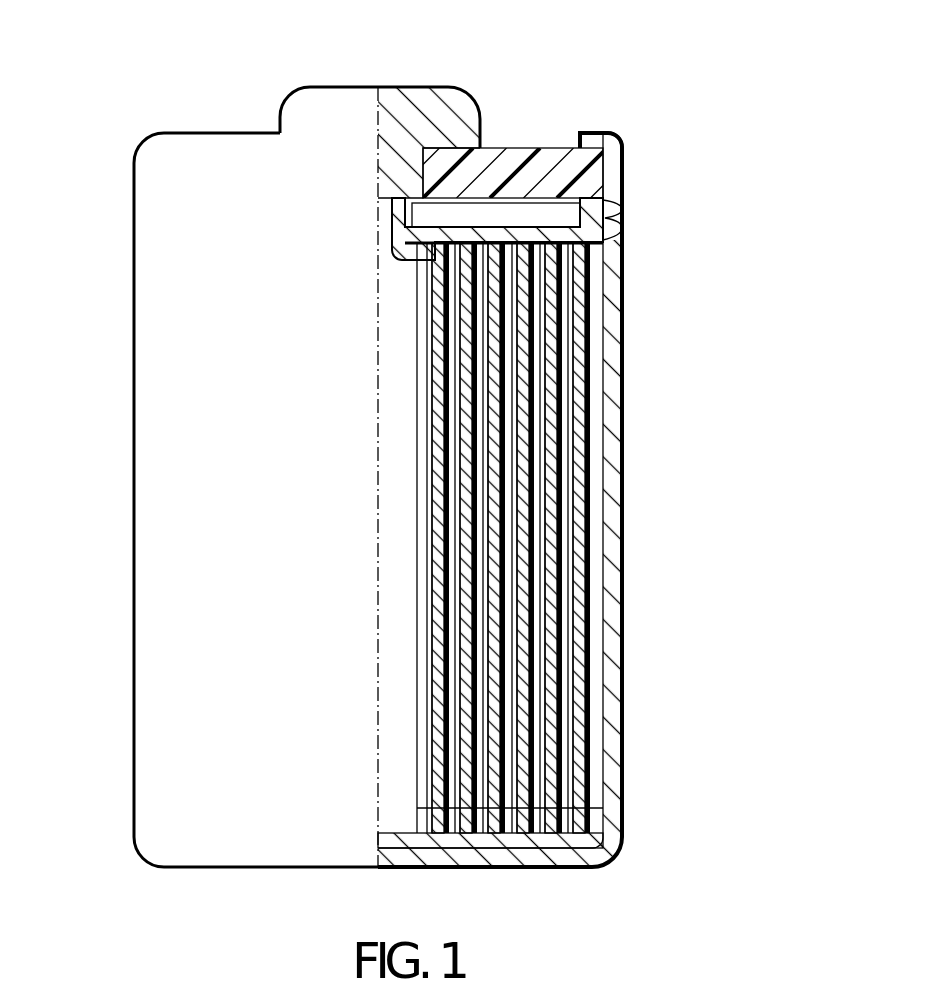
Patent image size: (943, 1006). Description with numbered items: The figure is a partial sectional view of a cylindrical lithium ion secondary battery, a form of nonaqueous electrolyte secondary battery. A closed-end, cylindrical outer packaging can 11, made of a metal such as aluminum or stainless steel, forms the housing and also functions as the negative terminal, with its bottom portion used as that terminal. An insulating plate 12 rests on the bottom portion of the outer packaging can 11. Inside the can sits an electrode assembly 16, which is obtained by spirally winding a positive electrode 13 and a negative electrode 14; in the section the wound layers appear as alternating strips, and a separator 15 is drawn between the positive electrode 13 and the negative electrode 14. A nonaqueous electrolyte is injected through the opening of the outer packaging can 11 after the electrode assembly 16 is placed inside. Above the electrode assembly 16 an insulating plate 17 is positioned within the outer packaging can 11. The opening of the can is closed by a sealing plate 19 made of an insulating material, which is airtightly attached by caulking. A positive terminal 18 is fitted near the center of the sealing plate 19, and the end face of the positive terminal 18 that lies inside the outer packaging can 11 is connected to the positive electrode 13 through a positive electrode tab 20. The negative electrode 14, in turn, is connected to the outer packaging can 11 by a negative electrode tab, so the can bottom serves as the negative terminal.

The outer packaging can 11 is at (609, 679).
The insulating plate 12 is at (513, 840).
The positive electrode 13 is at (557, 322).
The negative electrode 14 is at (582, 425).
The separator 15 is at (568, 378).
The electrode assembly 16 is at (570, 538).
The insulating plate 17 is at (608, 235).
The positive terminal 18 is at (415, 90).
The sealing plate 19 is at (542, 158).
The positive electrode tab 20 is at (398, 238).